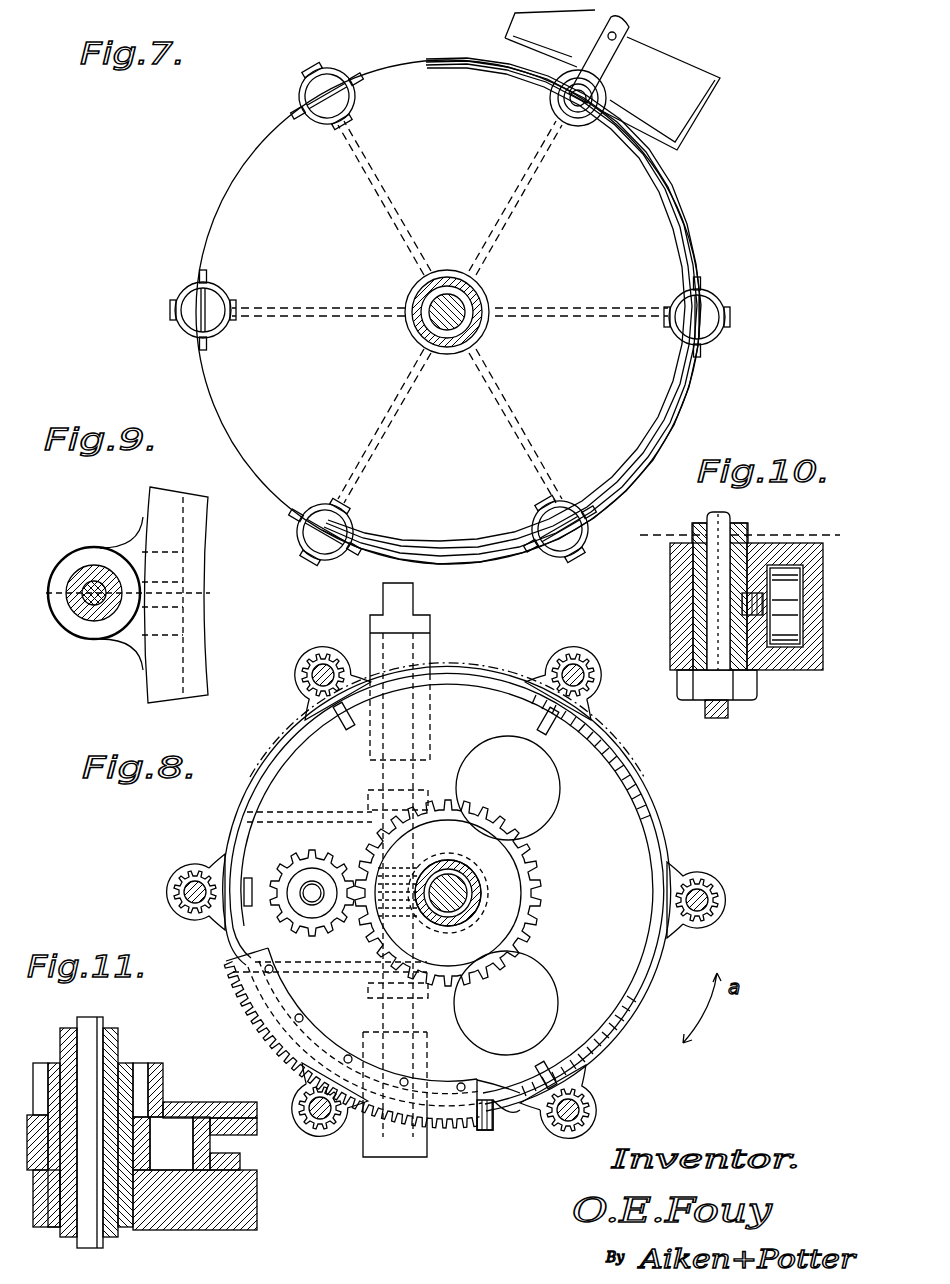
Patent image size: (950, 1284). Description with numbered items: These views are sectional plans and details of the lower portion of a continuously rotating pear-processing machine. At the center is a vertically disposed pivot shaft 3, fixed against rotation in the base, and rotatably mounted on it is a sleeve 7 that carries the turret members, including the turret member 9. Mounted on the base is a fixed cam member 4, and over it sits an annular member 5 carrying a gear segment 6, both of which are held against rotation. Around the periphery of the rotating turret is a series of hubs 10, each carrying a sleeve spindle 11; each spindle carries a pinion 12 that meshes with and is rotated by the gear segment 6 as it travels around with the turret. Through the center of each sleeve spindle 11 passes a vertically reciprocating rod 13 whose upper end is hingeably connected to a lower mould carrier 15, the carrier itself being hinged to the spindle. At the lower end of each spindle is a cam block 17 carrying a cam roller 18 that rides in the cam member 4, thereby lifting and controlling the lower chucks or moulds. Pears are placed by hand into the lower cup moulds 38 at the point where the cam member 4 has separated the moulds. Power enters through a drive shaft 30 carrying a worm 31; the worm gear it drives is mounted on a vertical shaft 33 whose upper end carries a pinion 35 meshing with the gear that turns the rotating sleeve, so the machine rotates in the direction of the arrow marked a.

In FIG. 7, the pivot shaft 3 is at (462, 318).
In FIG. 9, the fixed cam member 4 is at (175, 595).
In FIG. 8, the annular member 5 is at (652, 840).
In FIG. 8, the gear segment 6 is at (262, 995).
In FIG. 7, the sleeve 7 is at (474, 303).
In FIG. 8, the sleeve 7 is at (483, 890).
In FIG. 10, the turret member 9 is at (740, 535).
In FIG. 8, the hub 10 is at (177, 876).
In FIG. 9, the hub 10 is at (127, 593).
In FIG. 8, the sleeve spindle 11 is at (338, 1078).
In FIG. 9, the sleeve spindle 11 is at (72, 610).
In FIG. 10, the sleeve spindle 11 is at (735, 532).
In FIG. 11, the sleeve spindle 11 is at (110, 1053).
In FIG. 8, the pinion 12 is at (195, 907).
In FIG. 9, the vertically reciprocating rod 13 is at (90, 598).
In FIG. 10, the vertically reciprocating rod 13 is at (720, 712).
In FIG. 11, the vertically reciprocating rod 13 is at (88, 1033).
In FIG. 7, the lower mould carrier 15 is at (180, 305).
In FIG. 9, the cam block 17 is at (128, 640).
In FIG. 10, the cam block 17 is at (688, 636).
In FIG. 10, the cam roller 18 is at (771, 606).
In FIG. 8, the drive shaft 30 is at (398, 600).
In FIG. 8, the worm 31 is at (411, 878).
In FIG. 8, the vertical shaft 33 is at (314, 889).
In FIG. 8, the pinion 35 is at (299, 849).
In FIG. 7, the lower cup mould 38 is at (190, 322).